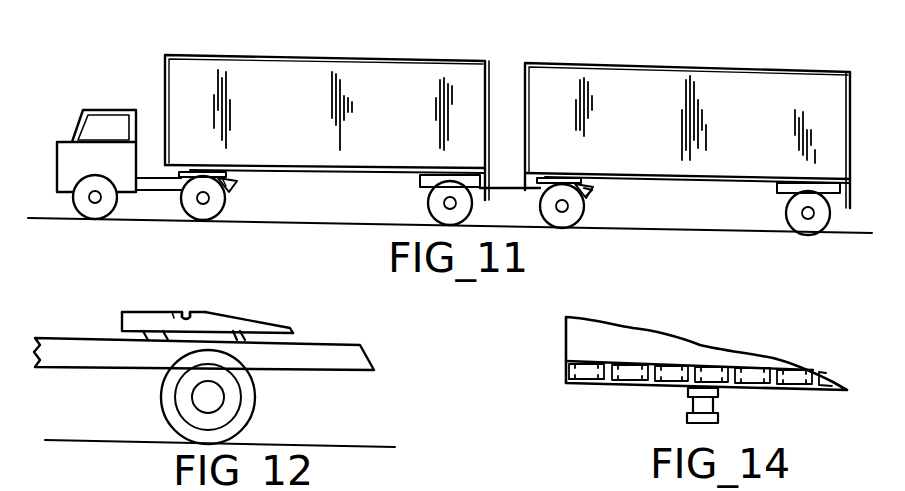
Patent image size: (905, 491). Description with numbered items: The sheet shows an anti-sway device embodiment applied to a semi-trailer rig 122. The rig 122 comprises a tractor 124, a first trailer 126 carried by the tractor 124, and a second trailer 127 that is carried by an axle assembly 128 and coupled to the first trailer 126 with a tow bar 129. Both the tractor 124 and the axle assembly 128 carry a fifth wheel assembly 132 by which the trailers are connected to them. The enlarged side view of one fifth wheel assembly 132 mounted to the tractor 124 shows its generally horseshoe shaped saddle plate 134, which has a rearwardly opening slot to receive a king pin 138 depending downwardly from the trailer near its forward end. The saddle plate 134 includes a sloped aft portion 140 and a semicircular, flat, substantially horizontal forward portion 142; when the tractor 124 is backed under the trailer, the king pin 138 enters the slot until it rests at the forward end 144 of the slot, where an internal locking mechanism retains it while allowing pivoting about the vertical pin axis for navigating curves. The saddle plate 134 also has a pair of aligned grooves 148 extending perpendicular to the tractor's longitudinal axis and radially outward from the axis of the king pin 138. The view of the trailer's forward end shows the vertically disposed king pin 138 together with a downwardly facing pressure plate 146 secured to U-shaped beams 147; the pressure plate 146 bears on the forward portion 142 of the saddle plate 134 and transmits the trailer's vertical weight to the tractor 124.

In FIG. 11, the semi-trailer rig 122 is at (139, 83).
In FIG. 11, the tractor 124 is at (87, 109).
In FIG. 11, the first trailer 126 is at (323, 58).
In FIG. 14, the first trailer 126 is at (575, 343).
In FIG. 11, the second trailer 127 is at (635, 63).
In FIG. 11, the axle assembly 128 is at (588, 194).
In FIG. 11, the tow bar 129 is at (528, 197).
In FIG. 12, the fifth wheel assembly 132 is at (166, 334).
In FIG. 12, the saddle plate 134 is at (122, 318).
In FIG. 14, the king pin 138 is at (720, 418).
In FIG. 12, the sloped aft portion 140 is at (258, 320).
In FIG. 12, the forward portion 142 is at (152, 310).
In FIG. 12, the forward end 144 is at (172, 312).
In FIG. 14, the pressure plate 146 is at (648, 386).
In FIG. 14, the U-shaped beams 147 is at (597, 366).
In FIG. 12, the grooves 148 is at (190, 314).